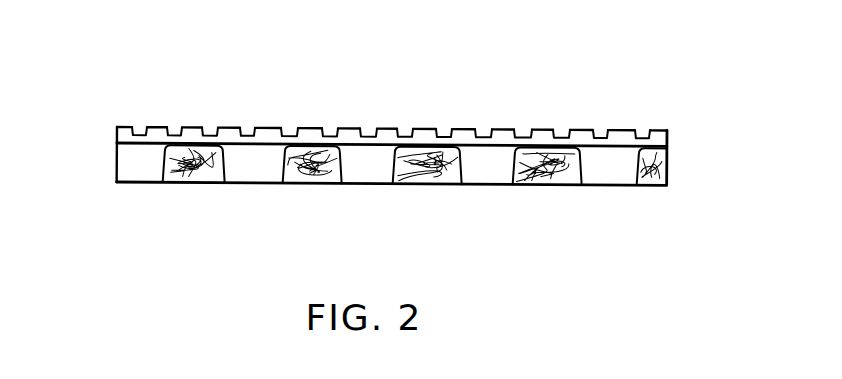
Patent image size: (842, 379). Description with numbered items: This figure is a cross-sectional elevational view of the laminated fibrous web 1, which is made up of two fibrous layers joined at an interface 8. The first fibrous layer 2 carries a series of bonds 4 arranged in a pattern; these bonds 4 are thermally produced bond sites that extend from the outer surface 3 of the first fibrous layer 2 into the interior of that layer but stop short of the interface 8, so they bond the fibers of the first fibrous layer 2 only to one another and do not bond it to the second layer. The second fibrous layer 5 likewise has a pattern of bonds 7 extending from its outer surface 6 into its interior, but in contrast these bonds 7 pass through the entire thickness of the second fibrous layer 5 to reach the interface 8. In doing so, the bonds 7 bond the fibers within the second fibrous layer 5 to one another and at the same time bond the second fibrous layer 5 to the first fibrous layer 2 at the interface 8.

The laminated fibrous web 1 is at (446, 84).
The first fibrous layer 2 is at (117, 139).
The outer surface 3 is at (229, 127).
The bonds 4 is at (329, 130).
The second fibrous layer 5 is at (117, 157).
The outer surface 6 is at (195, 183).
The bonds 7 is at (372, 170).
The interface 8 is at (299, 150).